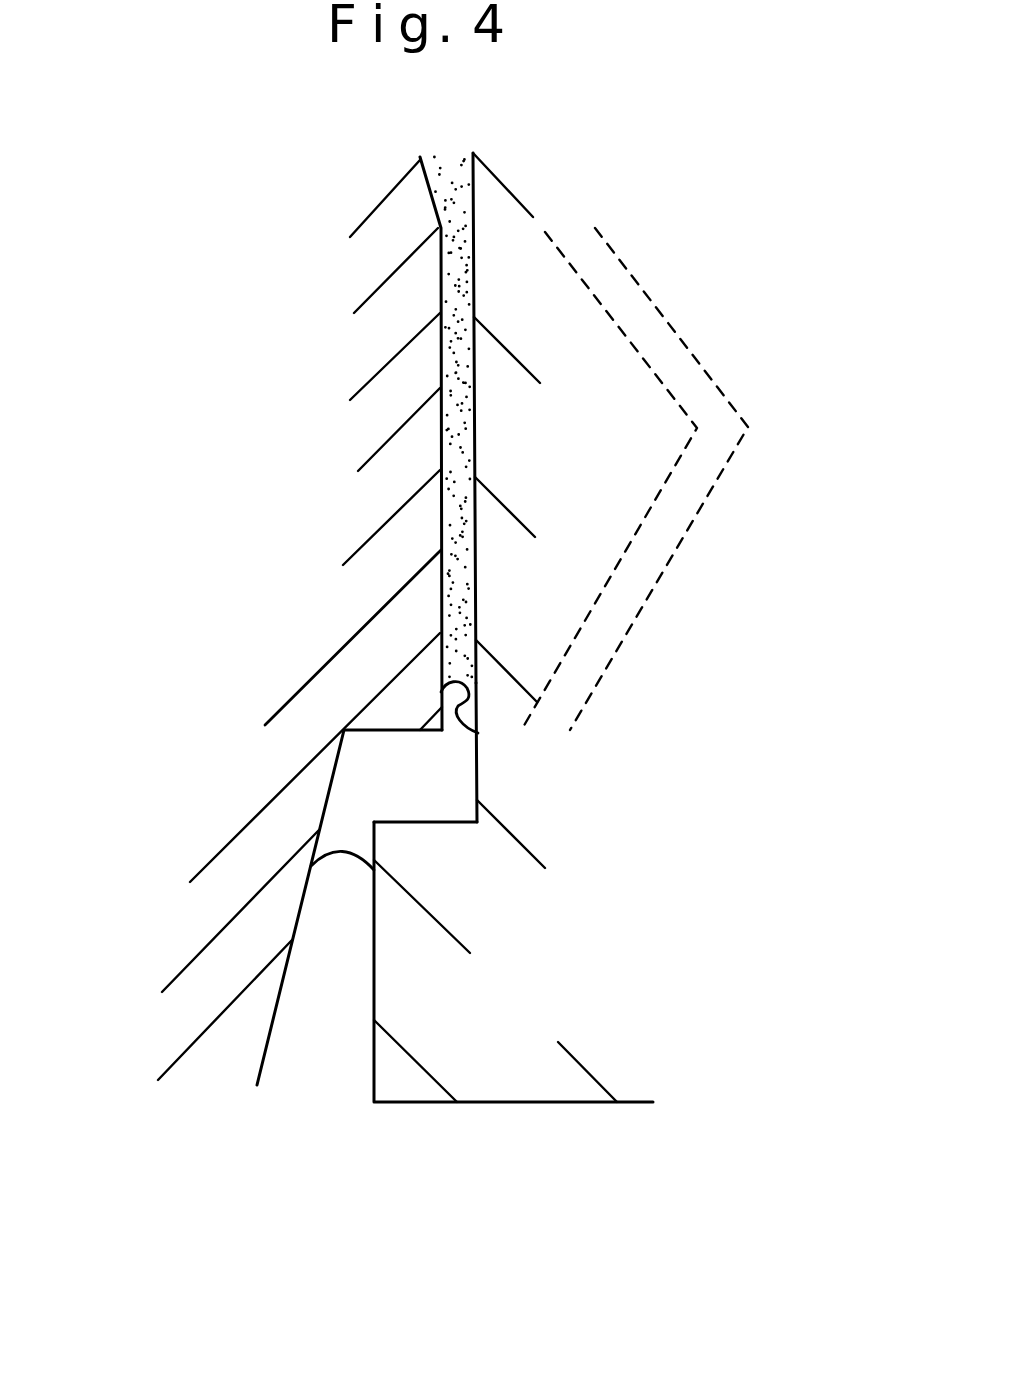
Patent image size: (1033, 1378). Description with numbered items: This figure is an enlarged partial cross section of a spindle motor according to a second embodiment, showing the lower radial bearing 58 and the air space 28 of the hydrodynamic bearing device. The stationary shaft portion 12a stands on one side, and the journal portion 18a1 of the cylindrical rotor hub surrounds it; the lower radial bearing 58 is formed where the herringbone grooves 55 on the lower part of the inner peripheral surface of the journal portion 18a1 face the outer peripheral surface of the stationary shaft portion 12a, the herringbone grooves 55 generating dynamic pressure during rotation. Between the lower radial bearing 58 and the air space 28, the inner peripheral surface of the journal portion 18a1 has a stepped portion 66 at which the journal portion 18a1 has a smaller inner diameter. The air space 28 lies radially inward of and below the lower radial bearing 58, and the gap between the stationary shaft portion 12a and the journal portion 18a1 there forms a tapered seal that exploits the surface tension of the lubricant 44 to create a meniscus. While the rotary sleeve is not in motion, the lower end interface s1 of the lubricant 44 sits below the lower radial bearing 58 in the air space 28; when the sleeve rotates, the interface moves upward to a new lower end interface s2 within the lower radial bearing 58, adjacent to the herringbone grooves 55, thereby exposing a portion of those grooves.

The stationary shaft portion 12a is at (305, 647).
The air space 28 is at (325, 1018).
The lubricant 44 is at (440, 465).
The lower radial bearing 58 is at (440, 540).
The stepped portion 66 is at (408, 787).
The journal portion 18a1 is at (523, 955).
The herringbone grooves 55 is at (653, 366).
The lower end interface s1 is at (328, 860).
The lower end interface s2 is at (478, 733).